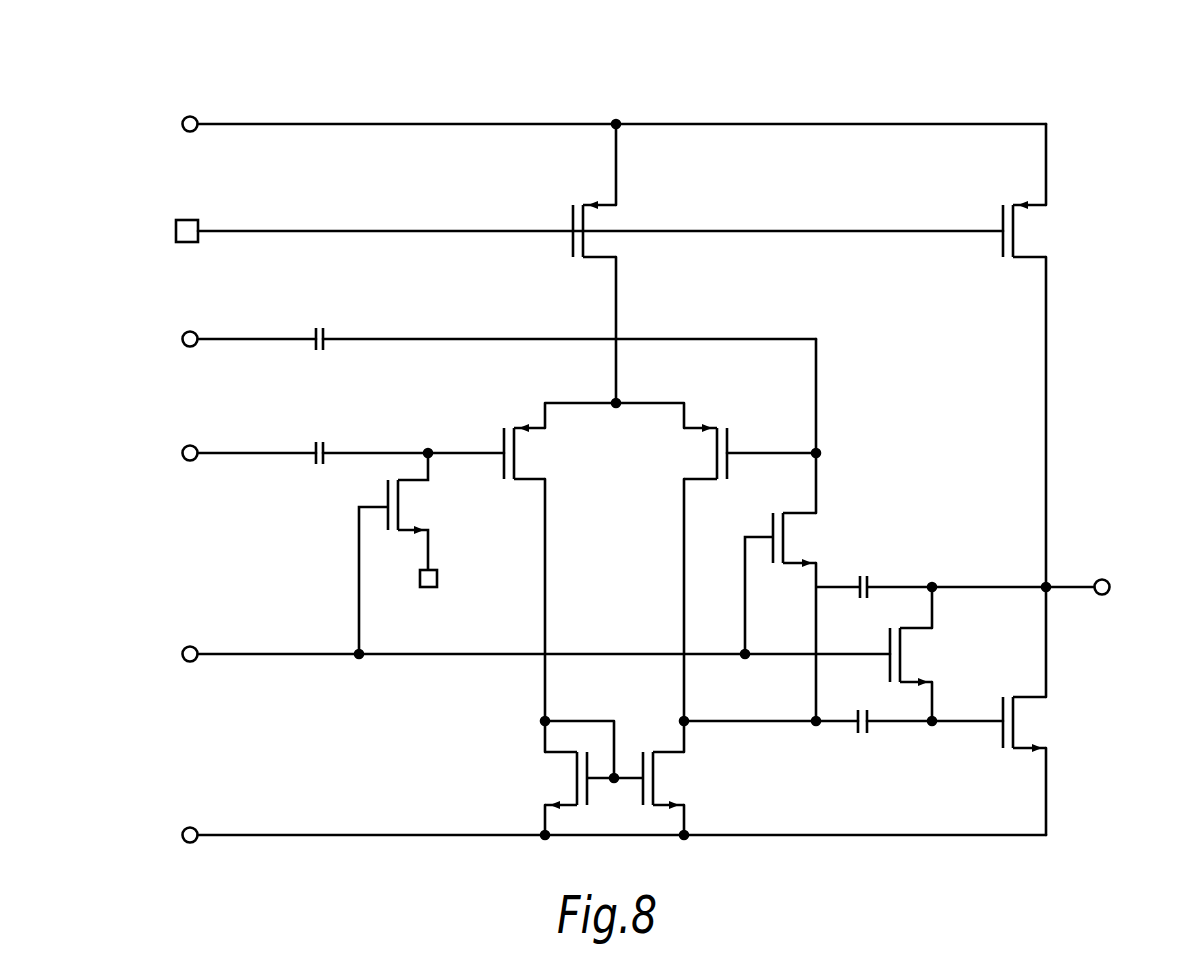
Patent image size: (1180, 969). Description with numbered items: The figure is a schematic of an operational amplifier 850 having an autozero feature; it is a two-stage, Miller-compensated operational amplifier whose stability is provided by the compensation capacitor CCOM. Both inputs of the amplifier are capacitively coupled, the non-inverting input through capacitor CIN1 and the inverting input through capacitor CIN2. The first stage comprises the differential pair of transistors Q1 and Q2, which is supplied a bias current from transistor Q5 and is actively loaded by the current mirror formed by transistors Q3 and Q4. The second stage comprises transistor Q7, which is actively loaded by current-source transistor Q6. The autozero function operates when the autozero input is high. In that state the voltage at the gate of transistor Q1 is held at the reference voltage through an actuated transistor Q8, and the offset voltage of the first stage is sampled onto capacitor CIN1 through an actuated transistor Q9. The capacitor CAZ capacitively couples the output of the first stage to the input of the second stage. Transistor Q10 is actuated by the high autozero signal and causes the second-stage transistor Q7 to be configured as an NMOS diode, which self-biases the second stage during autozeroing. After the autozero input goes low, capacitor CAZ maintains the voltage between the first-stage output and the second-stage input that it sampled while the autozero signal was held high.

The operational amplifier 850 is at (100, 46).
The transistor Q1 is at (536, 451).
The transistor Q2 is at (687, 451).
The transistor Q3 is at (575, 779).
The transistor Q4 is at (675, 779).
The transistor Q5 is at (613, 214).
The current-source transistor Q6 is at (1036, 228).
The transistor Q7 is at (1035, 722).
The transistor Q8 is at (406, 553).
The transistor Q9 is at (792, 581).
The transistor Q10 is at (927, 656).
The capacitor CIN1 is at (315, 314).
The capacitor CIN2 is at (315, 427).
The capacitor CCOM is at (931, 563).
The capacitor CAZ is at (869, 748).